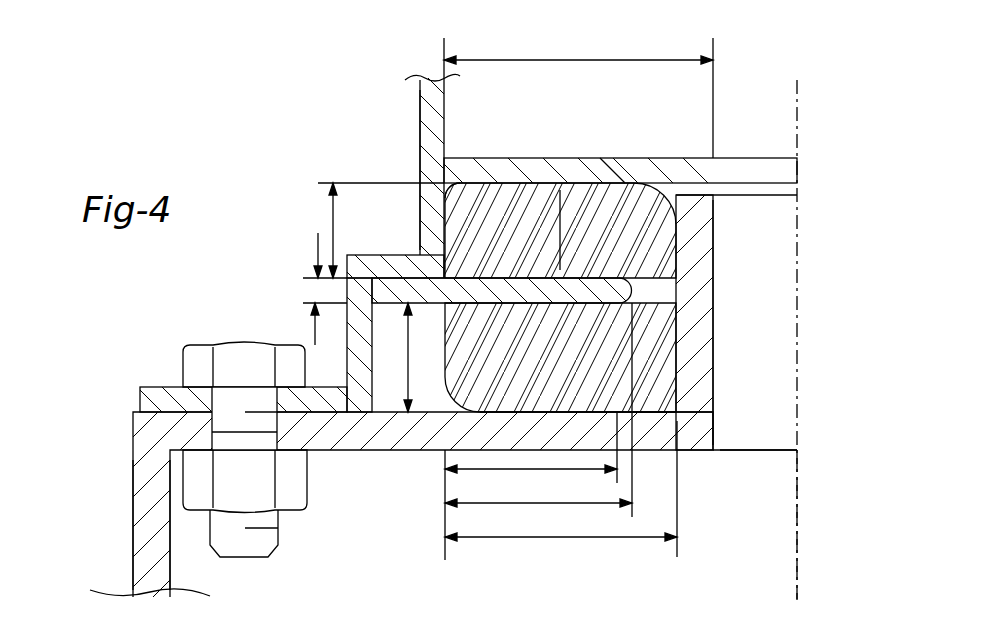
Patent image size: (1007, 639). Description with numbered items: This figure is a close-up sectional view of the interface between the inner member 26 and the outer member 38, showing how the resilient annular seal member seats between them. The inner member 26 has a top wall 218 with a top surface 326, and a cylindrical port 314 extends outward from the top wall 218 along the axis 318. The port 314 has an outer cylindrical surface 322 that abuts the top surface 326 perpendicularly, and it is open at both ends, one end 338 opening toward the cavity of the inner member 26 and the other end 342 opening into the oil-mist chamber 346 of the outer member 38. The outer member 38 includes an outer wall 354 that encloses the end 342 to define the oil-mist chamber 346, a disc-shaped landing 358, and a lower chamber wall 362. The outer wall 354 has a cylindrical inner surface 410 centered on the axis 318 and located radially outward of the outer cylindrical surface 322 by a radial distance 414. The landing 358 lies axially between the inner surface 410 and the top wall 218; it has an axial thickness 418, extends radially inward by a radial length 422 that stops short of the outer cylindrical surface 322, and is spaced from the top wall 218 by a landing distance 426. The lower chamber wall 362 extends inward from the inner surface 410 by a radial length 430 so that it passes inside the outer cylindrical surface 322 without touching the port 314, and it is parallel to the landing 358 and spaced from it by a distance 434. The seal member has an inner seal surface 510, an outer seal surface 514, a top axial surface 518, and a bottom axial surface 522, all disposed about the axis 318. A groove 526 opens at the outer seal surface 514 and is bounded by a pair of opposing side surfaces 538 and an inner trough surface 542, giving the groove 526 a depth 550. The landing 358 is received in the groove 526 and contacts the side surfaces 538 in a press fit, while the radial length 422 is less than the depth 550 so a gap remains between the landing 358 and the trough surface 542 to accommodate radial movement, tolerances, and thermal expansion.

The inner member 26 is at (145, 510).
The outer member 38 is at (425, 100).
The top wall 218 is at (322, 450).
The port 314 is at (702, 333).
The axis 318 is at (798, 555).
The outer cylindrical surface 322 is at (655, 372).
The top surface 326 is at (160, 410).
The end of the port 338 is at (767, 450).
The end of the port 342 is at (758, 195).
The oil-mist chamber 346 is at (750, 105).
The outer wall 354 is at (428, 175).
The landing 358 is at (577, 287).
The lower chamber wall 362 is at (626, 176).
The inner surface 410 is at (461, 183).
The radial distance 414 is at (618, 538).
The axial thickness 418 is at (318, 246).
The radial length 422 is at (477, 469).
The landing distance 426 is at (407, 383).
The radial length 430 is at (668, 60).
The distance 434 is at (333, 213).
The inner seal surface 510 is at (676, 252).
The outer seal surface 514 is at (437, 232).
The top axial surface 518 is at (536, 183).
The bottom axial surface 522 is at (487, 420).
The groove 526 is at (630, 290).
The side surfaces 538 is at (545, 280).
The inner trough surface 542 is at (636, 290).
The depth 550 is at (508, 503).